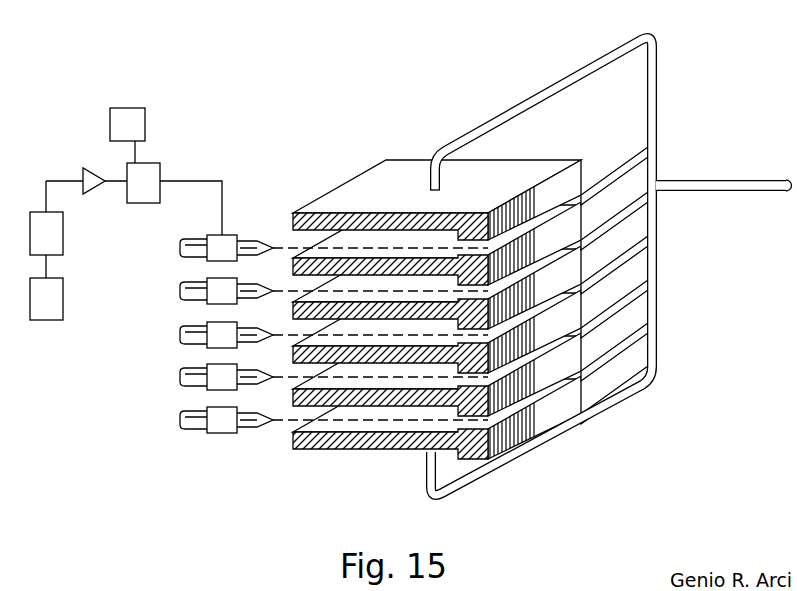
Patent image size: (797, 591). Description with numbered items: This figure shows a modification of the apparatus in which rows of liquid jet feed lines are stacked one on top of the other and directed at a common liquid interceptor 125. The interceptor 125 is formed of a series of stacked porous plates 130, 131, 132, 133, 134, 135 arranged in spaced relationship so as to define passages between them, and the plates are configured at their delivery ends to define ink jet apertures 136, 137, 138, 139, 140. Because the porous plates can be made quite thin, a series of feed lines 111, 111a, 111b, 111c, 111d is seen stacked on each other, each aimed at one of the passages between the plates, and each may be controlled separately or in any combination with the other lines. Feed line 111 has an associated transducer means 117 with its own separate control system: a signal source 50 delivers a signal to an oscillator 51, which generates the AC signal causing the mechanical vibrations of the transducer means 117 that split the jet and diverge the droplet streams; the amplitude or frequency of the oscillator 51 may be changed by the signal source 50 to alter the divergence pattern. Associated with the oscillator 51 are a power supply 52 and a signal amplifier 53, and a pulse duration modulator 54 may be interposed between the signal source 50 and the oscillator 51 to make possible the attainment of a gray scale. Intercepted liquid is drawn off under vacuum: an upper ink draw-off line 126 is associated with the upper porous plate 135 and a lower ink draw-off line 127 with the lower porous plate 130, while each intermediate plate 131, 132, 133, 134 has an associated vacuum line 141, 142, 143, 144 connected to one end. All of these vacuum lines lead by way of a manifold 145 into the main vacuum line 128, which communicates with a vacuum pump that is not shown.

The signal source 50 is at (57, 309).
The oscillator 51 is at (154, 194).
The power supply 52 is at (138, 136).
The signal amplifier 53 is at (92, 171).
The pulse duration modulator 54 is at (57, 244).
The feed line 111 is at (302, 233).
The feed line 111a is at (180, 291).
The feed line 111b is at (180, 335).
The feed line 111c is at (180, 377).
The feed line 111d is at (180, 420).
The transducer means 117 is at (213, 236).
The liquid interceptor 125 is at (358, 156).
The upper ink draw-off line 126 is at (473, 130).
The lower ink draw-off line 127 is at (473, 478).
The main vacuum line 128 is at (726, 180).
The lower porous plate 130 is at (332, 451).
The intermediate porous plate 131 is at (463, 413).
The intermediate porous plate 132 is at (481, 395).
The intermediate porous plate 133 is at (477, 324).
The intermediate porous plate 134 is at (492, 207).
The upper porous plate 135 is at (502, 174).
The ink jet aperture 136 is at (510, 407).
The ink jet aperture 137 is at (520, 358).
The ink jet aperture 138 is at (527, 313).
The ink jet aperture 139 is at (540, 265).
The ink jet aperture 140 is at (510, 228).
The vacuum line 141 is at (632, 323).
The vacuum line 142 is at (630, 272).
The vacuum line 143 is at (628, 222).
The vacuum line 144 is at (625, 172).
The manifold 145 is at (659, 70).